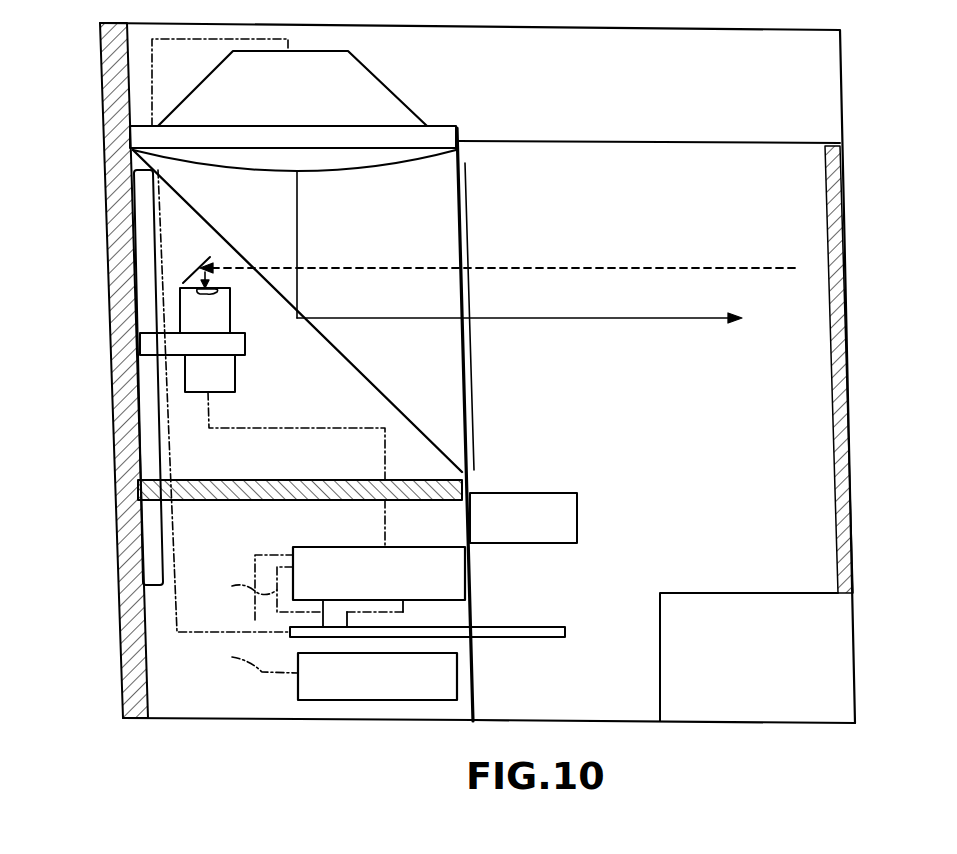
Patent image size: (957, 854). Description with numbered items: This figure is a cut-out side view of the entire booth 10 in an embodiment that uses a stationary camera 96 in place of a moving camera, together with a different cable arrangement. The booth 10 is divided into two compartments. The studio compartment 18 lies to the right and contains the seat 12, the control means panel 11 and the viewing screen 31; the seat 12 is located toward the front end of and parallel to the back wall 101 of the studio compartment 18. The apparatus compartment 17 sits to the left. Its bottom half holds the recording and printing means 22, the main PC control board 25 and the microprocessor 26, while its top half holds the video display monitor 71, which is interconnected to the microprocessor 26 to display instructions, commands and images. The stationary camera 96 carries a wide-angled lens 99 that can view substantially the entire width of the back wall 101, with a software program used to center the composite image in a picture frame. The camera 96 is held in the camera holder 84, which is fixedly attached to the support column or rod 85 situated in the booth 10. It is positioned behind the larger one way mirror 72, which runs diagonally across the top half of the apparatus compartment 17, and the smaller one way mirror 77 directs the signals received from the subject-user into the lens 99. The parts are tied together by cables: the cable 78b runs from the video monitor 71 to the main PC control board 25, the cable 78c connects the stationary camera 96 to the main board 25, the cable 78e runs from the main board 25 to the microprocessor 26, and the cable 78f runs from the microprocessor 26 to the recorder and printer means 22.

The booth 10 is at (866, 104).
The control means panel 11 is at (562, 511).
The seat 12 is at (728, 606).
The apparatus compartment 17 is at (205, 693).
The studio compartment 18 is at (606, 705).
The recording and printing means 22 is at (445, 673).
The main PC control board 25 is at (513, 632).
The microprocessor 26 is at (452, 568).
The viewing screen 31 is at (467, 212).
The video display monitor 71 is at (366, 76).
The larger one way mirror 72 is at (372, 382).
The smaller one way mirror 77 is at (194, 268).
The cable 78b is at (156, 94).
The cable 78c is at (268, 427).
The cable 78e is at (256, 587).
The cable 78f is at (243, 659).
The camera holder 84 is at (163, 345).
The support column or rod 85 is at (160, 446).
The stationary camera 96 is at (190, 318).
The wide-angled lens 99 is at (214, 294).
The back wall 101 is at (830, 432).